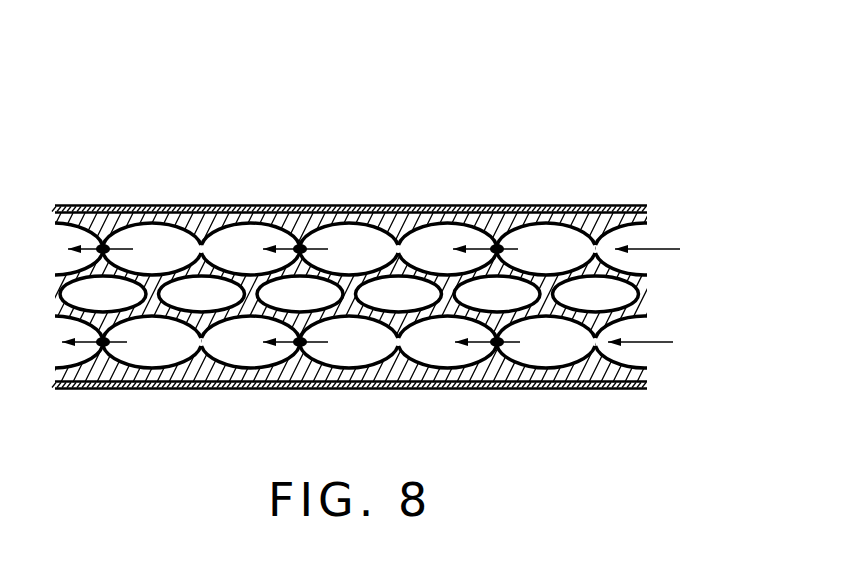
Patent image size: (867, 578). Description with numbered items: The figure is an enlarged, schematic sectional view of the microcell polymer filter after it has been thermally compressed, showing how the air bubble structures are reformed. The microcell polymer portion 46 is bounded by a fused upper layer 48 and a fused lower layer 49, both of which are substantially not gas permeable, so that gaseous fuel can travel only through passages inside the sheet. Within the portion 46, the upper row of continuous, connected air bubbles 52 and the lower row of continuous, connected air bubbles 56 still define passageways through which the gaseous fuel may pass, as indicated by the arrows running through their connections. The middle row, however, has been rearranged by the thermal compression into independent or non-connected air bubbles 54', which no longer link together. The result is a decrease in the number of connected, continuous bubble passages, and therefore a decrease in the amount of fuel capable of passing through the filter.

The microcell polymer portion 46 is at (418, 203).
The fused upper layer 48 is at (505, 207).
The fused lower layer 49 is at (478, 390).
The continuous, connected air bubbles 52 is at (553, 246).
The independent air bubbles 54' is at (636, 294).
The continuous, connected air bubbles 56 is at (542, 357).